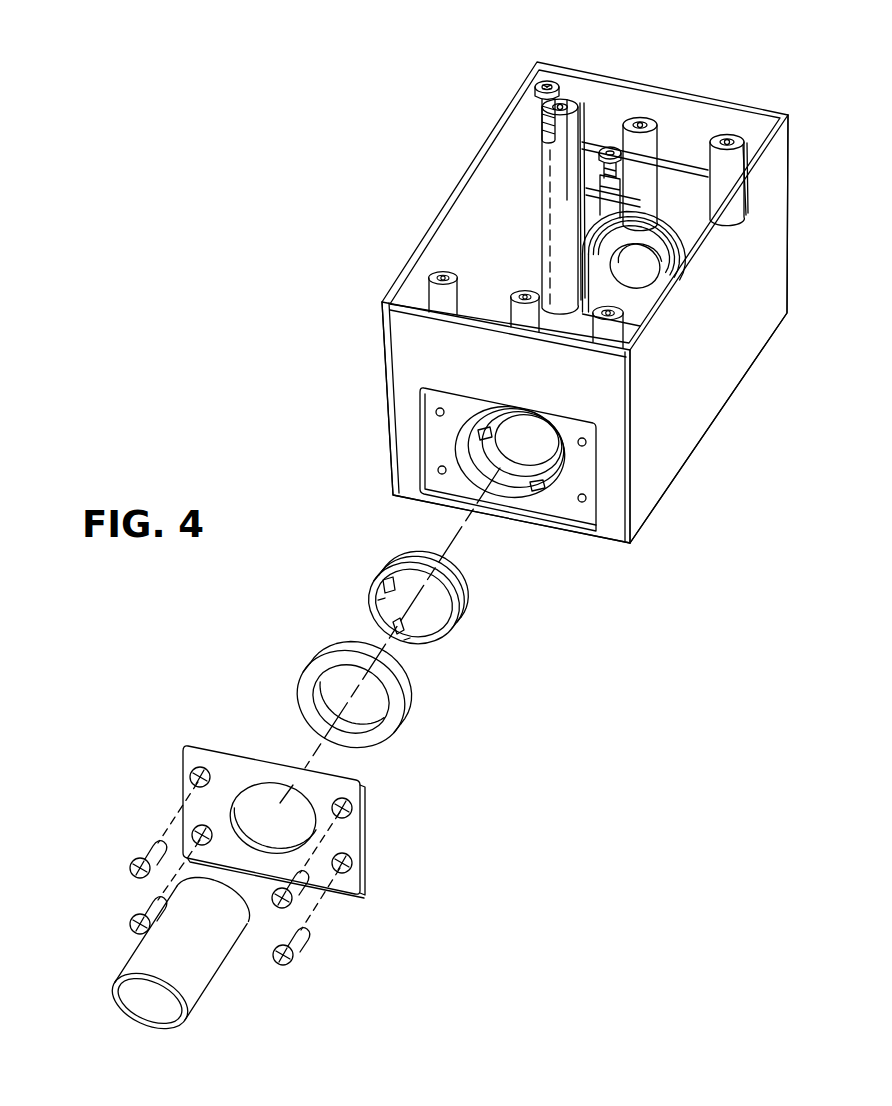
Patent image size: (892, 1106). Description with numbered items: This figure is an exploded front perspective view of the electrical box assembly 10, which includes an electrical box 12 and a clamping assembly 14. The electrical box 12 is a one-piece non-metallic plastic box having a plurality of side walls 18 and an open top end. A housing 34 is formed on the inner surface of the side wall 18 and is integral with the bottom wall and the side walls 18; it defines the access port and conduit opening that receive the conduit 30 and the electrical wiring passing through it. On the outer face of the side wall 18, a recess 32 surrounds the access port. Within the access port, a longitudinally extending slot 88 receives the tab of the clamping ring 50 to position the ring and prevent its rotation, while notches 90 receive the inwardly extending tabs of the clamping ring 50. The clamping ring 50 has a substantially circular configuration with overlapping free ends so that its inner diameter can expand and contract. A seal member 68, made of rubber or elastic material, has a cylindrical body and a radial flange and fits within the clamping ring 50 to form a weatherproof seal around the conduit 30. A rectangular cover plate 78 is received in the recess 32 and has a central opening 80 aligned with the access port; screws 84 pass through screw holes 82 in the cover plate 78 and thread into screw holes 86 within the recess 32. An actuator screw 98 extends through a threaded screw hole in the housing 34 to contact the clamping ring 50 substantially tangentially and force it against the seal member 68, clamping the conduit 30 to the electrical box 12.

The electrical box assembly 10 is at (224, 296).
The electrical box 12 is at (713, 458).
The clamping assembly 14 is at (470, 705).
The side walls 18 is at (407, 343).
The conduit 30 is at (205, 989).
The recess 32 is at (428, 440).
The housing 34 is at (592, 258).
The clamping ring 50 is at (481, 607).
The seal member 68 is at (408, 747).
The cover plate 78 is at (379, 857).
The central opening 80 is at (267, 812).
The screw holes 82 is at (186, 776).
The screws 84 is at (147, 852).
The screw holes 86 is at (437, 410).
The longitudinally extending slot 88 is at (520, 490).
The notches 90 is at (483, 432).
The actuator screw 98 is at (552, 118).